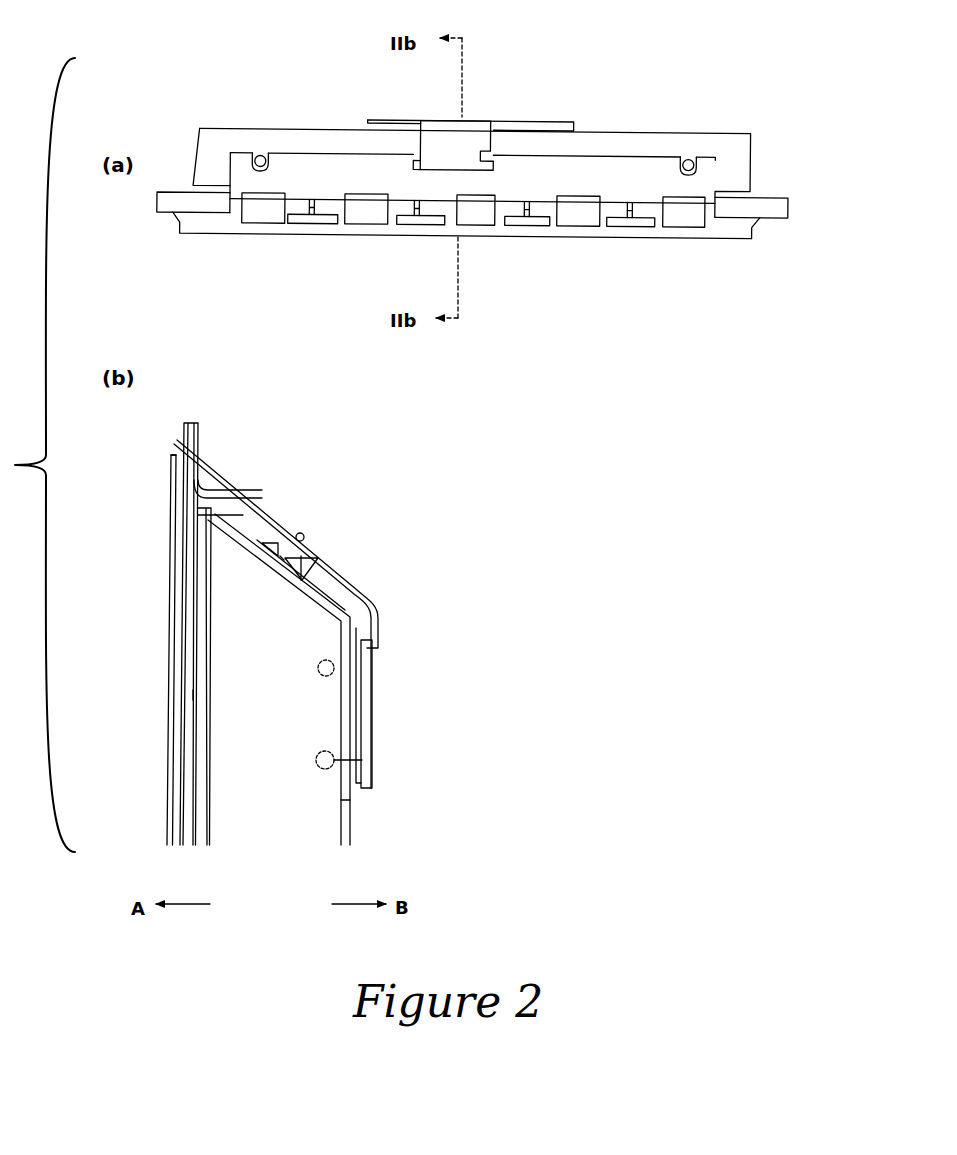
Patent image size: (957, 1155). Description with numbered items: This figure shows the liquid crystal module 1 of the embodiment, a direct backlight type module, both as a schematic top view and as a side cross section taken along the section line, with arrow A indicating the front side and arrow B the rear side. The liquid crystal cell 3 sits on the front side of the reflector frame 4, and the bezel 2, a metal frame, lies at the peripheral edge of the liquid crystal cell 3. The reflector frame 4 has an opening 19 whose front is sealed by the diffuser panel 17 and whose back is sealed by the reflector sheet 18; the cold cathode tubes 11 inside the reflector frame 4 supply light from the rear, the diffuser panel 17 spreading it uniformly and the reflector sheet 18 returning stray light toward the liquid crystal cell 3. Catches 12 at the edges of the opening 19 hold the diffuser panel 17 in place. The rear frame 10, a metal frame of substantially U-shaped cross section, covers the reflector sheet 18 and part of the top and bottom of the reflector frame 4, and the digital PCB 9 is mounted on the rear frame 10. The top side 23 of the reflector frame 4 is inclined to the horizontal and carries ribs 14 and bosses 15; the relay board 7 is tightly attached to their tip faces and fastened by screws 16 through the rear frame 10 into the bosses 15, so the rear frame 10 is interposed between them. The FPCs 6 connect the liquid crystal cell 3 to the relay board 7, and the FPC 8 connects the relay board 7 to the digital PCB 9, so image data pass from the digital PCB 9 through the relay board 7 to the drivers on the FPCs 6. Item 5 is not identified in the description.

The liquid crystal module 1 is at (552, 656).
The bezel 2 is at (630, 237).
The liquid crystal cell 3 is at (180, 597).
The reflector frame 4 is at (746, 210).
The small electronic component 5 is at (525, 220).
The FPCs 6 is at (577, 220).
The relay board 7 is at (695, 178).
The FPC 8 is at (478, 148).
The digital PCB 9 is at (535, 122).
The rear frame 10 is at (722, 152).
The cold cathode tubes 11 is at (368, 752).
The catches 12 is at (173, 488).
The ribs 14 is at (243, 523).
The bosses 15 is at (317, 560).
The screws 16 is at (264, 155).
The diffuser panel 17 is at (202, 693).
The reflector sheet 18 is at (340, 800).
The opening 19 is at (235, 784).
The top side 23 is at (282, 558).